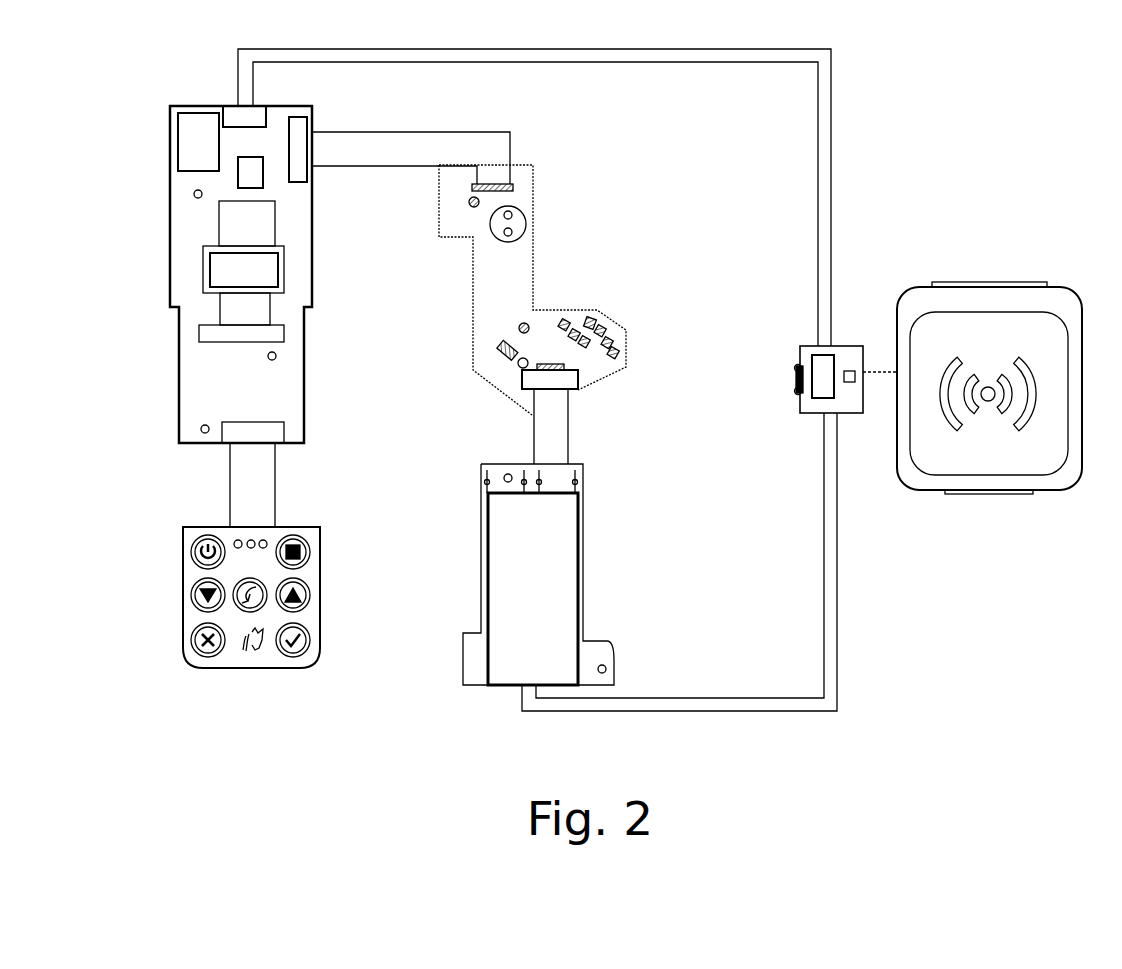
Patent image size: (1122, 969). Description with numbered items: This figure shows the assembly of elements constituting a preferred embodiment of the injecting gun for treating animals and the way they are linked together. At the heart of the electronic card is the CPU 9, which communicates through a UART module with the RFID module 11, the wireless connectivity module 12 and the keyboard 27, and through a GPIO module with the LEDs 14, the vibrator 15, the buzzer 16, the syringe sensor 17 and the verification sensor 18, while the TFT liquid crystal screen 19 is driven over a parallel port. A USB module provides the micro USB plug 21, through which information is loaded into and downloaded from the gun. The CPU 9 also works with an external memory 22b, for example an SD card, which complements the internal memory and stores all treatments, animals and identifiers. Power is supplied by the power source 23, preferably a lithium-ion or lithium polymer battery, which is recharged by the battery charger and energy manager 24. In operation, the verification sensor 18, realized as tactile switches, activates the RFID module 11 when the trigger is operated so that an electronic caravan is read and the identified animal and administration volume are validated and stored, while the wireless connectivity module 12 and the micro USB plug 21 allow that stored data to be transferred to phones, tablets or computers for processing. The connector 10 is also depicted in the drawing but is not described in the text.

The CPU 9 is at (222, 224).
The connector 10 is at (237, 118).
The RFID module 11 is at (825, 390).
The wireless connectivity module 12 is at (195, 140).
The LEDs 14 is at (236, 540).
The vibrator 15 is at (583, 548).
The buzzer 16 is at (518, 224).
The syringe sensor 17 is at (505, 345).
The verification sensor 18 is at (625, 345).
The TFT liquid crystal screen 19 is at (258, 273).
The micro USB plug 21 is at (795, 378).
The external memory 22b is at (248, 173).
The power source 23 is at (535, 584).
The battery charger and energy manager 24 is at (224, 383).
The keyboard 27 is at (190, 613).